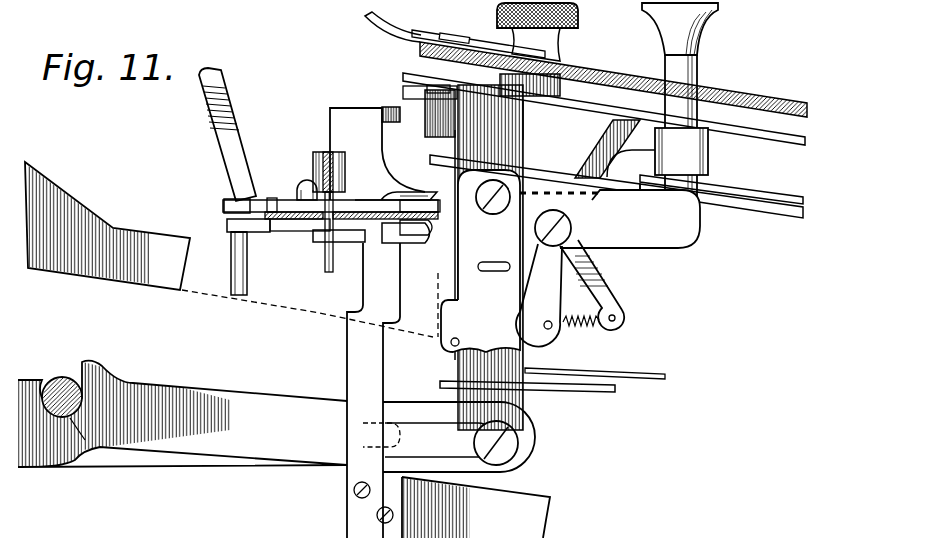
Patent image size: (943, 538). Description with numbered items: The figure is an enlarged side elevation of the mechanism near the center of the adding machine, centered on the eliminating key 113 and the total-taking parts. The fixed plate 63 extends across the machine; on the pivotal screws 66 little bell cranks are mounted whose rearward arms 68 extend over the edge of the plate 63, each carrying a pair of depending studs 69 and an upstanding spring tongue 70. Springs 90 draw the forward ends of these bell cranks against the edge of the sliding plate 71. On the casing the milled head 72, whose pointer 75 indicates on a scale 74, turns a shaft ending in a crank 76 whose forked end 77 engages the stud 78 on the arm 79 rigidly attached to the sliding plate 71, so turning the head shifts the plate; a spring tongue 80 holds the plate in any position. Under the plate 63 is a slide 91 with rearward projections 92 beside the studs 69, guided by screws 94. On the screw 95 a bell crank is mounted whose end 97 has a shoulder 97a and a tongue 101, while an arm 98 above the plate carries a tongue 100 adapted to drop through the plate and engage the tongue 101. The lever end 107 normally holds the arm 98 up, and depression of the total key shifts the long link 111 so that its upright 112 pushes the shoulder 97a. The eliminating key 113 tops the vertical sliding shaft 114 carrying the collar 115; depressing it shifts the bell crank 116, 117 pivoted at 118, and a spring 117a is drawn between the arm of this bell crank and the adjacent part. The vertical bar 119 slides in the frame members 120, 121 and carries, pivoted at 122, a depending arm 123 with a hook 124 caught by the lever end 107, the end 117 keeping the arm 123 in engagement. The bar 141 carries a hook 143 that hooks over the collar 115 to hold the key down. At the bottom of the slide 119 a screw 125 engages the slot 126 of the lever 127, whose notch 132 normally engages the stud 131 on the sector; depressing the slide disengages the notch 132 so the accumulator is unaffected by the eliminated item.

The plate 63 is at (281, 198).
The pivotal screws 66 is at (363, 192).
The rearward arm of bell crank 68 is at (262, 200).
The studs 69 is at (238, 263).
The tongue 70 is at (222, 151).
The sliding plate 71 is at (430, 203).
The milled head 72 is at (578, 27).
The scale 74 is at (417, 32).
The pointer 75 is at (455, 33).
The crank 76 is at (523, 123).
The forked end 77 is at (441, 120).
The stud 78 is at (420, 90).
The arm 79 is at (365, 153).
The spring tongue 80 is at (420, 184).
The springs 90 is at (305, 188).
The slide 91 is at (232, 242).
The rearward projections 92 is at (228, 224).
The screws 94 is at (279, 229).
The screw 95 is at (401, 229).
The bell crank end 97 is at (396, 236).
The shoulder 97a is at (343, 254).
The arm 98 is at (340, 176).
The tongue 100 is at (307, 307).
The tongue 101 is at (313, 238).
The lever end 107 is at (445, 312).
The long link 111 is at (476, 507).
The upright 112 is at (378, 390).
The eliminating key 113 is at (707, 30).
The vertical sliding shaft 114 is at (703, 185).
The collar 115 is at (708, 152).
The bell crank arm 116 is at (610, 219).
The bell crank end 117 is at (528, 275).
The spring 117a is at (583, 330).
The pivot 118 is at (607, 263).
The vertical bar 119 is at (493, 365).
The frame member 120 is at (510, 167).
The frame member 121 is at (580, 390).
The pivot 122 is at (494, 213).
The depending arm 123 is at (499, 285).
The hook 124 is at (457, 303).
The screw 125 is at (520, 450).
The slot 126 is at (449, 437).
The lever 127 is at (182, 415).
The stud 131 is at (50, 378).
The notch 132 is at (80, 428).
The bar 141 is at (770, 208).
The hook 143 is at (613, 125).